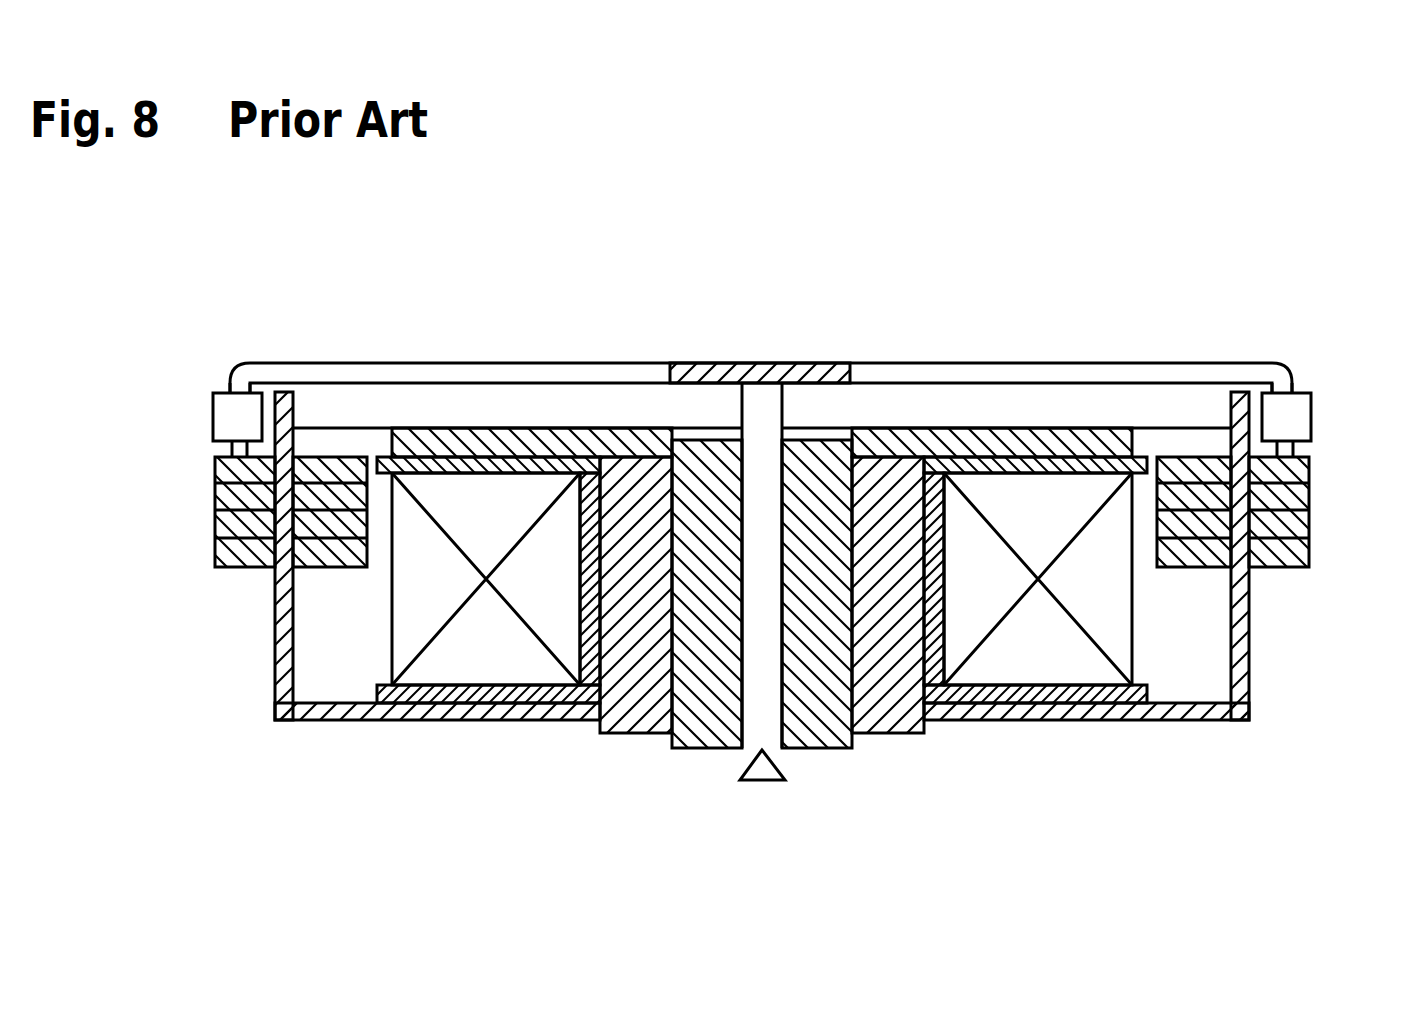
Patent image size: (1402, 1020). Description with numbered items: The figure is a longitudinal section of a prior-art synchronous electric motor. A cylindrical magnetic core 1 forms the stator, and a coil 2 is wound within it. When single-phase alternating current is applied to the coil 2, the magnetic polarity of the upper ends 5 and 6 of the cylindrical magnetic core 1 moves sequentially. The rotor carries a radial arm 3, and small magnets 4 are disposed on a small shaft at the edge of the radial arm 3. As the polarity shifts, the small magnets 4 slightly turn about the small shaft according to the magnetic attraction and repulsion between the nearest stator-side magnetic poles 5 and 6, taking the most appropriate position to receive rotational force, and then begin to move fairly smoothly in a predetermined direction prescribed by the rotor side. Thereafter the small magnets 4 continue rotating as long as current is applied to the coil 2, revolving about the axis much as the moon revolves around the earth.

The cylindrical magnetic core 1 is at (273, 643).
The coil 2 is at (487, 665).
The radial arm 3 is at (509, 371).
The small magnets 4 is at (212, 414).
The upper end 5 is at (1232, 399).
The upper end 6 is at (302, 413).